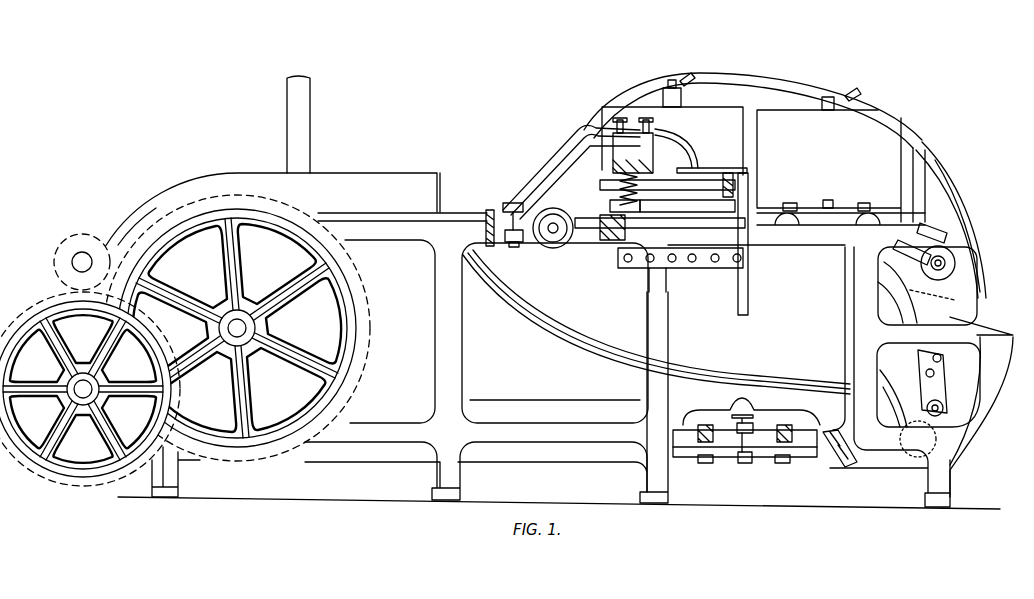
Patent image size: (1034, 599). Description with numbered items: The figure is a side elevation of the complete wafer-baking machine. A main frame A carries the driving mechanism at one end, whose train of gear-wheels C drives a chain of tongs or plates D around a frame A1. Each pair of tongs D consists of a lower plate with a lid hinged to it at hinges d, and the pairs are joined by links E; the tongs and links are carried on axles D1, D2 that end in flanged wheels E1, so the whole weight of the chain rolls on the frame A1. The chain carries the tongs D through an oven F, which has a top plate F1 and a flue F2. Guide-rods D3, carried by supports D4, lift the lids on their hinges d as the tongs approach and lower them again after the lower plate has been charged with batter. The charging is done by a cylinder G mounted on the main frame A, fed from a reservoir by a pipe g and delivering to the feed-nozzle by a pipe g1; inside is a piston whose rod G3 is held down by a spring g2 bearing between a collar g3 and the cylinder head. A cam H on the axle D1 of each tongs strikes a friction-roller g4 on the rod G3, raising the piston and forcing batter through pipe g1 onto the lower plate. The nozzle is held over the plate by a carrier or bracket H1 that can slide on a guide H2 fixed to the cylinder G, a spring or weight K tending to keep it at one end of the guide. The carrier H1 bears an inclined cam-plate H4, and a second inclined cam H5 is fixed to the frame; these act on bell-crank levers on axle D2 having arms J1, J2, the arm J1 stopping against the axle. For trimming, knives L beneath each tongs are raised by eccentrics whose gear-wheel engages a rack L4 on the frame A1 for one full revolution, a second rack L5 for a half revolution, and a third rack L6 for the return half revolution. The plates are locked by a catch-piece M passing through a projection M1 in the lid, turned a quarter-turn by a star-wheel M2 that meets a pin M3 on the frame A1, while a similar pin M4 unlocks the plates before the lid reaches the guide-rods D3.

The main frame A is at (445, 330).
The frame A1 is at (577, 412).
The train of gear-wheels C is at (152, 257).
The oven F is at (273, 259).
The top plate F1 is at (375, 185).
The flue F2 is at (292, 133).
The pipe g is at (585, 123).
The pipe g1 is at (700, 167).
The spring g2 is at (630, 200).
The collar g3 is at (615, 193).
The friction-roller g4 is at (580, 232).
The cylinder G is at (630, 160).
The piston-rod G3 is at (615, 181).
The tongs or plates D is at (873, 150).
The axle D1 is at (757, 478).
The axle D2 is at (725, 235).
The guide-rods D3 is at (960, 217).
The supports D4 is at (695, 77).
The hinges d is at (867, 207).
The links E is at (905, 290).
The flanged wheels E1 is at (553, 220).
The cam H is at (627, 265).
The carrier or bracket H1 is at (700, 168).
The guide H2 is at (710, 180).
The inclined cam-plate H4 is at (723, 203).
The second inclined cam H5 is at (727, 263).
The arm J1 is at (730, 233).
The arm J2 is at (687, 209).
The spring or weight K is at (750, 300).
The blades or knives L is at (900, 240).
The rack L4 is at (925, 365).
The second rack L5 is at (669, 279).
The third rack L6 is at (586, 277).
The catch-piece M is at (505, 222).
The projection M1 is at (822, 98).
The star-wheel M2 is at (513, 247).
The pin M3 is at (493, 250).
The pin M4 is at (945, 318).